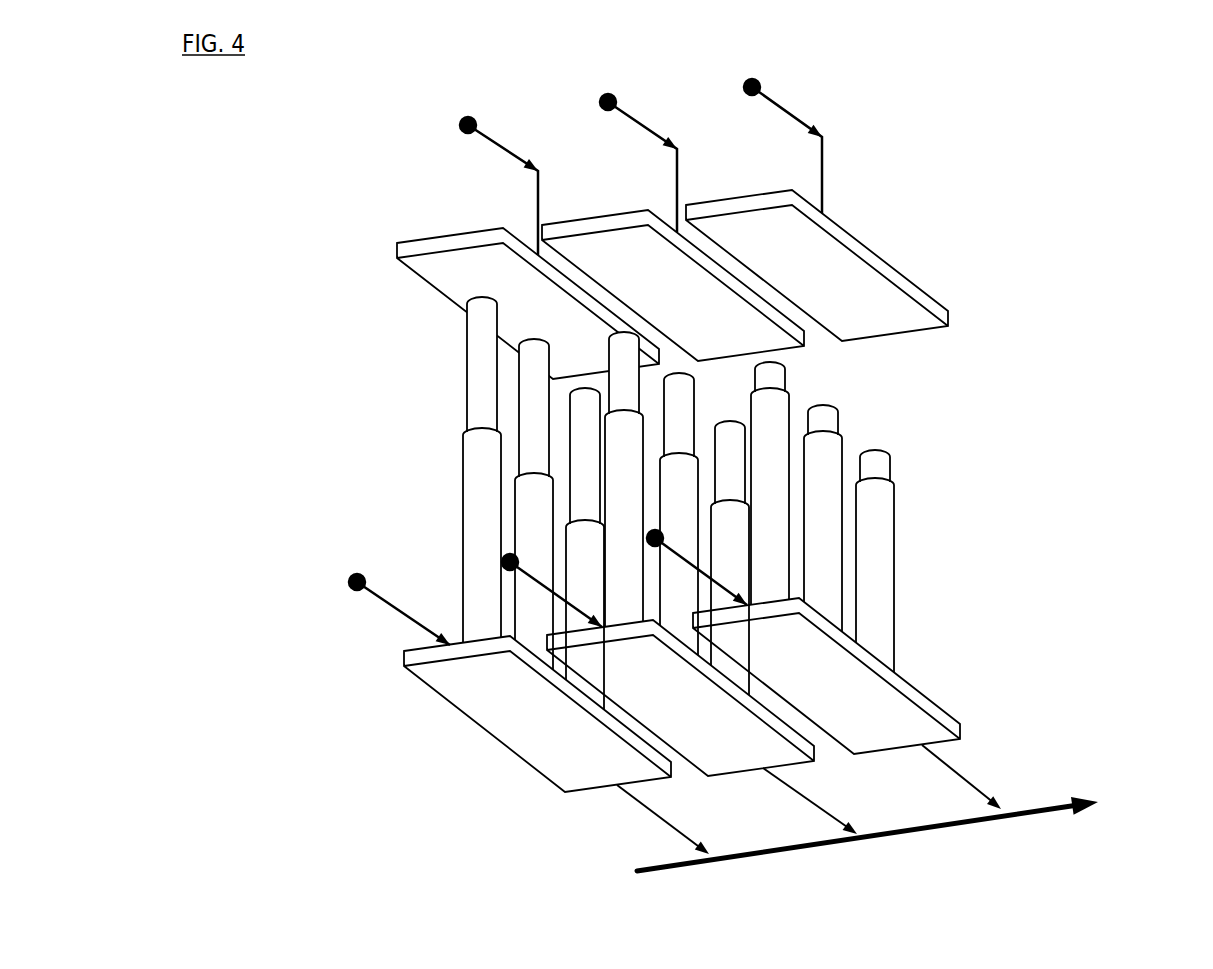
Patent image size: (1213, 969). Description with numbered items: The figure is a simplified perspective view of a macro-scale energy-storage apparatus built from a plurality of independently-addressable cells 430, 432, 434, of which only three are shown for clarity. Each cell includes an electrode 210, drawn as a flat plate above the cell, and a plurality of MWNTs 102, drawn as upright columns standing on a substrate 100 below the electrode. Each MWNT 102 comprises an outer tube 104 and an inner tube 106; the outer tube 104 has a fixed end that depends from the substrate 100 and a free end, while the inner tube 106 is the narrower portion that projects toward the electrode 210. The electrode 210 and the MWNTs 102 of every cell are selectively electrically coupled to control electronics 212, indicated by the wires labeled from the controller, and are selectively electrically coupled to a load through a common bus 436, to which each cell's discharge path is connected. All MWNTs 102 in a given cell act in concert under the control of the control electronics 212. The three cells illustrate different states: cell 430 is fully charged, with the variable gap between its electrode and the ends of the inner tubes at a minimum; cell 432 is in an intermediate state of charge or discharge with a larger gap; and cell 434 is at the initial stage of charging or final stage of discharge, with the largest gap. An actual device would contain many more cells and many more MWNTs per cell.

The substrate 100 is at (547, 733).
The MWNT 102 is at (760, 503).
The outer tube 104 is at (879, 556).
The inner tube 106 is at (877, 468).
The electrode 210 is at (672, 260).
The control electronics 212 is at (547, 361).
The cell 430 is at (465, 216).
The cell 432 is at (620, 194).
The cell 434 is at (866, 217).
The bus 436 is at (873, 810).